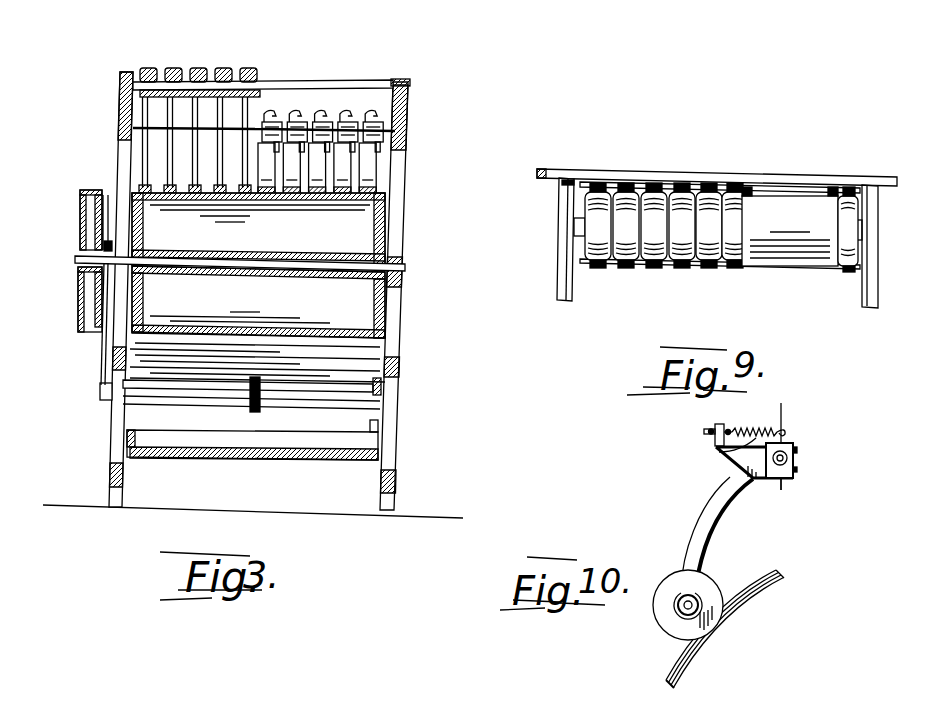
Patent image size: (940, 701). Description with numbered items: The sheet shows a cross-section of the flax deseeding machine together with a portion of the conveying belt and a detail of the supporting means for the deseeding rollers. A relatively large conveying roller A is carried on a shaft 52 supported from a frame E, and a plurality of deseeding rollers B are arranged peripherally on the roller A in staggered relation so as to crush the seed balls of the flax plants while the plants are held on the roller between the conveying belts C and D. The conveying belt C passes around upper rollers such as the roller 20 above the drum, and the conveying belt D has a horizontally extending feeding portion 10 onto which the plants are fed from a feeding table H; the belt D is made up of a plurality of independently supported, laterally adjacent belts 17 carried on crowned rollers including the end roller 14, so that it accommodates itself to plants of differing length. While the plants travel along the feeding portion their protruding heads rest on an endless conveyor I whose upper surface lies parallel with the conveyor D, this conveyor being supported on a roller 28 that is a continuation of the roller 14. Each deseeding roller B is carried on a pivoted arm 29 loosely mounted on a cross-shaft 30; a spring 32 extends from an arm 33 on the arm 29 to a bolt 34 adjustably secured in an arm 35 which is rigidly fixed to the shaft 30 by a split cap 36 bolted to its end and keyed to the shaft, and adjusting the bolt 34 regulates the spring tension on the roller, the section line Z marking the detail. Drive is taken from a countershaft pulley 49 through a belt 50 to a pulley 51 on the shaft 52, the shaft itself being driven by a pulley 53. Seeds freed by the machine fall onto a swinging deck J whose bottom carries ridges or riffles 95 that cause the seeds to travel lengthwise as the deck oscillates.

In FIG. 3, the upper roller 20 is at (260, 73).
In FIG. 3, the cross-shaft 30 is at (373, 118).
In FIG. 10, the cross-shaft 30 is at (793, 477).
In FIG. 3, the pivoted arm 29 is at (360, 157).
In FIG. 10, the pivoted arm 29 is at (710, 513).
In FIG. 3, the deseeding roller B is at (373, 177).
In FIG. 10, the deseeding roller B is at (663, 588).
In FIG. 3, the conveying roller A is at (383, 227).
In FIG. 10, the conveying roller A is at (733, 615).
In FIG. 3, the frame E is at (398, 368).
In FIG. 3, the conveying belt C is at (173, 117).
In FIG. 3, the swinging deck J is at (340, 447).
In FIG. 3, the ridges or riffles 95 is at (295, 455).
In FIG. 3, the pulley 49 is at (103, 388).
In FIG. 3, the belt 50 is at (103, 348).
In FIG. 3, the pulley 51 is at (108, 230).
In FIG. 3, the shaft 52 is at (80, 257).
In FIG. 3, the pulley 53 is at (80, 300).
In FIG. 9, the feeding portion 10 is at (637, 180).
In FIG. 9, the conveying belt D is at (665, 182).
In FIG. 9, the belt 17 is at (713, 182).
In FIG. 9, the endless conveyor I is at (777, 187).
In FIG. 9, the feeding table H is at (837, 183).
In FIG. 9, the end roller 14 is at (677, 253).
In FIG. 9, the roller 28 is at (772, 253).
In FIG. 10, the spring 32 is at (720, 448).
In FIG. 10, the arm 33 is at (793, 443).
In FIG. 10, the bolt 34 is at (727, 430).
In FIG. 10, the arm 35 is at (715, 446).
In FIG. 10, the split cap 36 is at (797, 467).
In FIG. 10, the section line Z is at (779, 452).